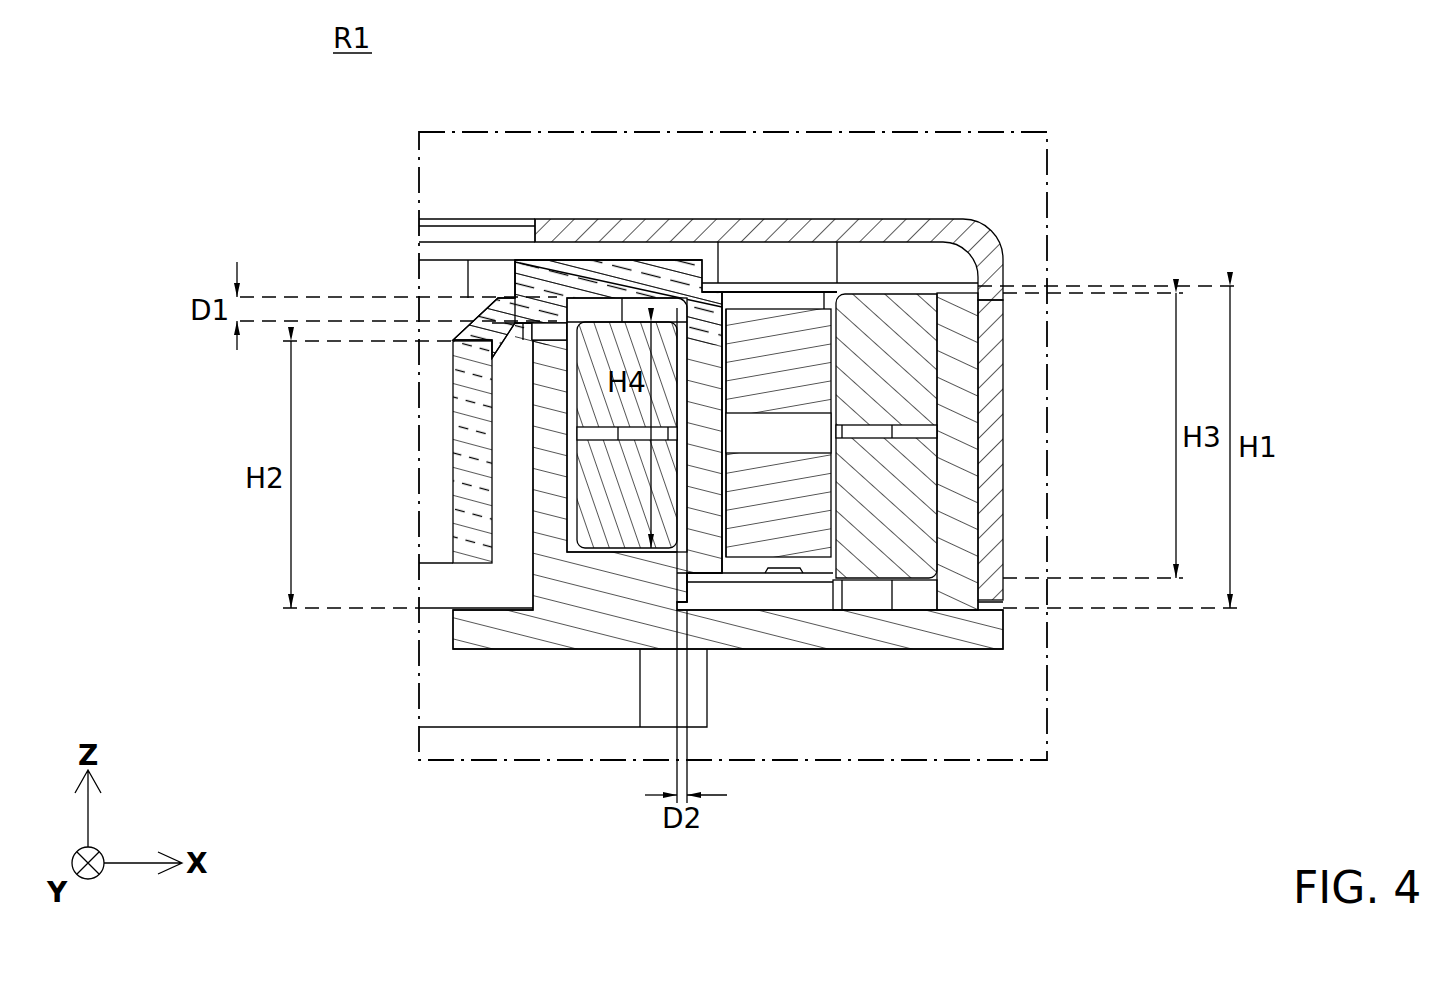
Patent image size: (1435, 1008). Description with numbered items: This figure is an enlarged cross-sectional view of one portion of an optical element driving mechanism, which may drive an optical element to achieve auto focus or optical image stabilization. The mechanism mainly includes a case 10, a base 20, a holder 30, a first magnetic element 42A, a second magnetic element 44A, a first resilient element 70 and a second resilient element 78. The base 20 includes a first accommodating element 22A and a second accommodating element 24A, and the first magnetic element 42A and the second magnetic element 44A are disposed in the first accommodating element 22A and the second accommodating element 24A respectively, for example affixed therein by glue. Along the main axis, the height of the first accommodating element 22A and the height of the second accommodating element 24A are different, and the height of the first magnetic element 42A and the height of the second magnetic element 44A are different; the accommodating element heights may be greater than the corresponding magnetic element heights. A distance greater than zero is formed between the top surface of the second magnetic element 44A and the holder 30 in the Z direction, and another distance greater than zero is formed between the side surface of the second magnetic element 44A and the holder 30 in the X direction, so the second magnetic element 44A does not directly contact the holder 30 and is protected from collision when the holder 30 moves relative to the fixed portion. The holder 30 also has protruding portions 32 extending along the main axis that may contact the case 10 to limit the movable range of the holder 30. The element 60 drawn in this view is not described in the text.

The case 10 is at (990, 342).
The base 20 is at (872, 633).
The first accommodating element 22A is at (962, 420).
The second accommodating element 24A is at (553, 374).
The holder 30 is at (473, 467).
The protruding portions 32 is at (672, 283).
The first magnetic element 42A is at (895, 350).
The second magnetic element 44A is at (600, 348).
The magnetic element 60 is at (780, 496).
The first resilient element 70 is at (771, 291).
The second resilient element 78 is at (787, 578).